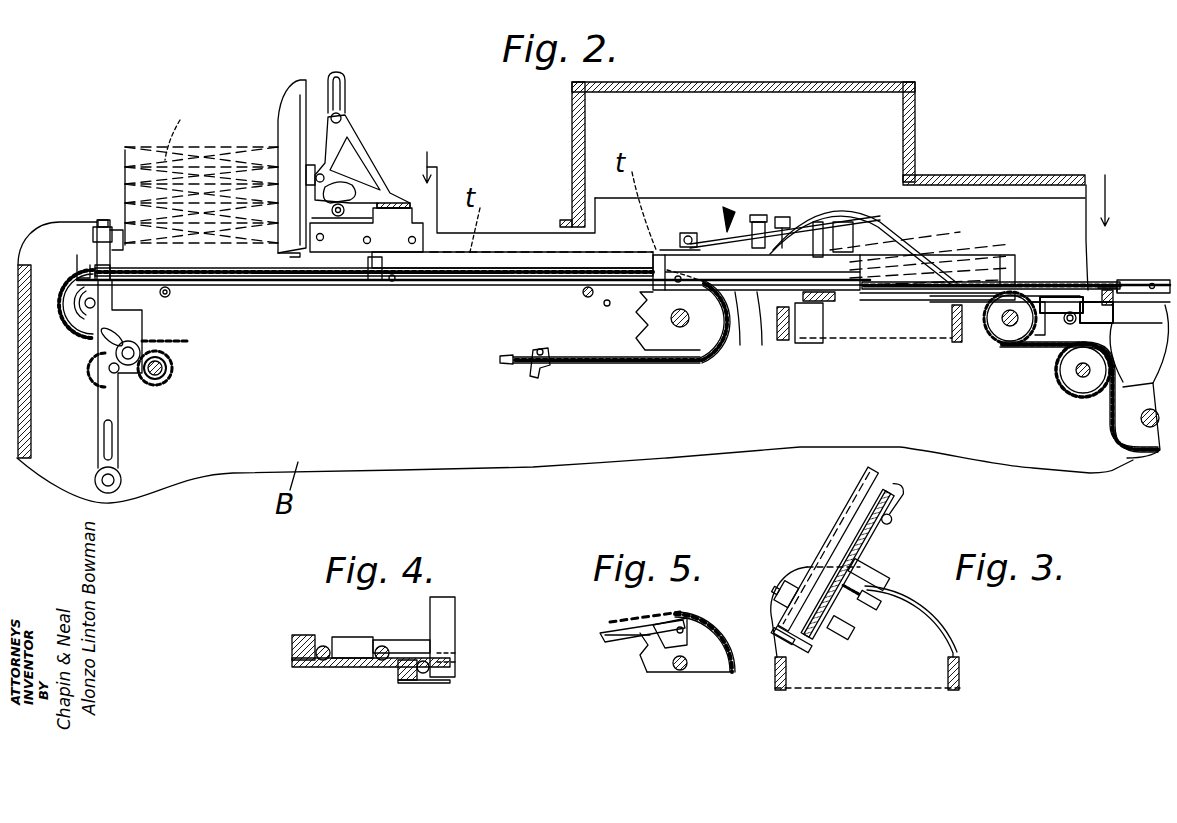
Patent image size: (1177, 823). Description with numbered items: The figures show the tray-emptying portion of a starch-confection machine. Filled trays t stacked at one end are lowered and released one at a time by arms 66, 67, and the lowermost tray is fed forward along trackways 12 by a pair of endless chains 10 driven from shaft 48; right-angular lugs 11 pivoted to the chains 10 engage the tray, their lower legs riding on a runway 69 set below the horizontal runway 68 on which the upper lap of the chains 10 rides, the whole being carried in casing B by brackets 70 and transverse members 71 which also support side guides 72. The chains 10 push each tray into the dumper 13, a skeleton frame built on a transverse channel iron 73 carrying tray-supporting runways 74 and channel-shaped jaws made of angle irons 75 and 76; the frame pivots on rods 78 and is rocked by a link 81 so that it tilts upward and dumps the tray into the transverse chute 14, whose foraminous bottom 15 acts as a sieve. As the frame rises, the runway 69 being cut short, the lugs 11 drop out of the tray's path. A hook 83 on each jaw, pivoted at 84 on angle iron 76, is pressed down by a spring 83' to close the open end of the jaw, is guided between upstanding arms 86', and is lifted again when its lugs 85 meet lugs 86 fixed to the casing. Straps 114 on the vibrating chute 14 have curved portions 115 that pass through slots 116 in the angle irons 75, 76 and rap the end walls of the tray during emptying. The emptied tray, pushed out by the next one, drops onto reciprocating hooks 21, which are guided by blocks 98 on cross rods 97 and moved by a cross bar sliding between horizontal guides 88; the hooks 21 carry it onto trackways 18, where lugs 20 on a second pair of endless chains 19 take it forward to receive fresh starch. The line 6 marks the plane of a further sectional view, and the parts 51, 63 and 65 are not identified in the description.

In FIG. 2, the section line 6- 6 is at (767, 192).
In FIG. 2, the endless chains 10 is at (465, 277).
In FIG. 4, the endless chains 10 is at (357, 647).
In FIG. 5, the endless chains 10 is at (650, 630).
In FIG. 2, the lugs 11 is at (385, 272).
In FIG. 4, the lugs 11 is at (447, 623).
In FIG. 5, the lugs 11 is at (682, 625).
In FIG. 2, the trackways 12 is at (547, 278).
In FIG. 4, the trackways 12 is at (297, 648).
In FIG. 2, the dumper 13 is at (728, 207).
In FIG. 2, the chute 14 is at (952, 320).
In FIG. 3, the chute 14 is at (959, 667).
In FIG. 2, the foraminous bottom 15 is at (855, 340).
In FIG. 3, the foraminous bottom 15 is at (837, 688).
In FIG. 2, the trackways 18 is at (1140, 262).
In FIG. 5, the trackways 18 is at (680, 668).
In FIG. 2, the endless chains 19 is at (993, 335).
In FIG. 2, the tray engaging lugs 20 is at (1030, 330).
In FIG. 2, the reciprocating hooks 21 is at (867, 298).
In FIG. 2, the shaft 48 is at (677, 325).
In FIG. 2, the plate 51 is at (1147, 422).
In FIG. 2, the plate 63 is at (352, 250).
In FIG. 2, the ratchet wheel 65 is at (165, 365).
In FIG. 2, the arm 66 is at (171, 169).
In FIG. 2, the arm 67 is at (336, 214).
In FIG. 4, the horizontal runway 68 is at (350, 668).
In FIG. 4, the runway 69 is at (420, 683).
In FIG. 5, the runway 69 is at (622, 638).
In FIG. 2, the brackets 70 is at (170, 293).
In FIG. 2, the transverse members 71 is at (205, 290).
In FIG. 2, the side guides 72 is at (587, 298).
In FIG. 2, the transverse channel iron 73 is at (790, 340).
In FIG. 3, the transverse channel iron 73 is at (772, 602).
In FIG. 3, the tray supporting runways 74 is at (853, 513).
In FIG. 2, the angle iron 75 is at (740, 290).
In FIG. 2, the angle iron 76 is at (757, 265).
In FIG. 3, the angle iron 76 is at (873, 535).
In FIG. 2, the rods 78 is at (862, 236).
In FIG. 2, the link 81 is at (1115, 328).
In FIG. 2, the hook 83 is at (851, 242).
In FIG. 3, the hook 83 is at (815, 657).
In FIG. 2, the spring 83' is at (832, 210).
In FIG. 3, the spring 83' is at (880, 615).
In FIG. 2, the pivot 84 is at (688, 232).
In FIG. 2, the lugs 85 is at (782, 217).
In FIG. 3, the lugs 85 is at (887, 577).
In FIG. 2, the lugs 86 is at (770, 198).
In FIG. 3, the lugs 86 is at (874, 644).
In FIG. 2, the arms 86' is at (850, 217).
In FIG. 2, the horizontal guides 88 is at (1093, 395).
In FIG. 2, the cross rods 97 is at (1063, 327).
In FIG. 2, the blocks 98 is at (1013, 350).
In FIG. 2, the straps 114 is at (925, 258).
In FIG. 3, the straps 114 is at (937, 607).
In FIG. 2, the curved portion 115 is at (838, 208).
In FIG. 3, the curved portion 115 is at (793, 583).
In FIG. 2, the slots 116 is at (772, 275).